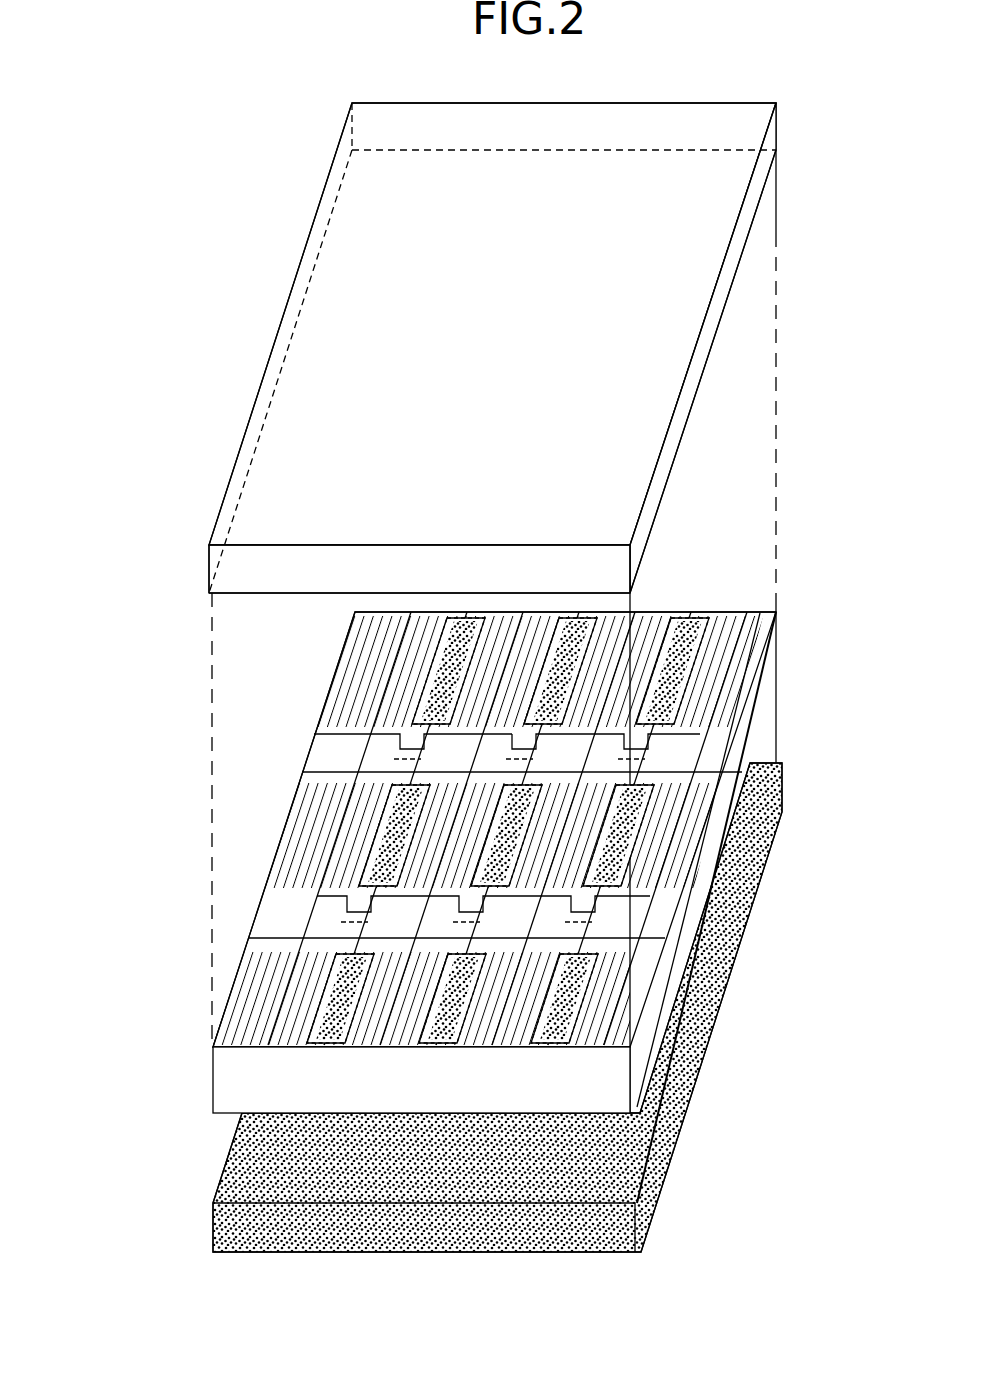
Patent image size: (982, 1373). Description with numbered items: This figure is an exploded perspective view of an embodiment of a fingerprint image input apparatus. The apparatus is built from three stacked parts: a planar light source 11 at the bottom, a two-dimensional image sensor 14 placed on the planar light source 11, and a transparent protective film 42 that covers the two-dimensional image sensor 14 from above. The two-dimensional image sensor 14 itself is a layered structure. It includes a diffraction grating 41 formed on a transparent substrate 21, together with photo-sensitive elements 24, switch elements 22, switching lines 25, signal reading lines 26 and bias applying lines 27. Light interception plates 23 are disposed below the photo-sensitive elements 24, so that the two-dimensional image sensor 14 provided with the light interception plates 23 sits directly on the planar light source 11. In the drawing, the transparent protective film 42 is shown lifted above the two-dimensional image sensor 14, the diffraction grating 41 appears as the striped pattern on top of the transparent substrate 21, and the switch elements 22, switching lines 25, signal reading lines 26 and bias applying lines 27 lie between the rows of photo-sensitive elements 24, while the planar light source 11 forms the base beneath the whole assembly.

The planar light source 11 is at (350, 1223).
The two-dimensional image sensor 14 is at (200, 1085).
The transparent substrate 21 is at (618, 1090).
The switch elements 22 is at (340, 907).
The light interception plates 23 is at (643, 938).
The photo-sensitive elements 24 is at (575, 1000).
The switching lines 25 is at (710, 774).
The signal reading lines 26 is at (363, 762).
The bias applying lines 27 is at (657, 750).
The diffraction grating 41 is at (752, 633).
The transparent protective film 42 is at (362, 218).